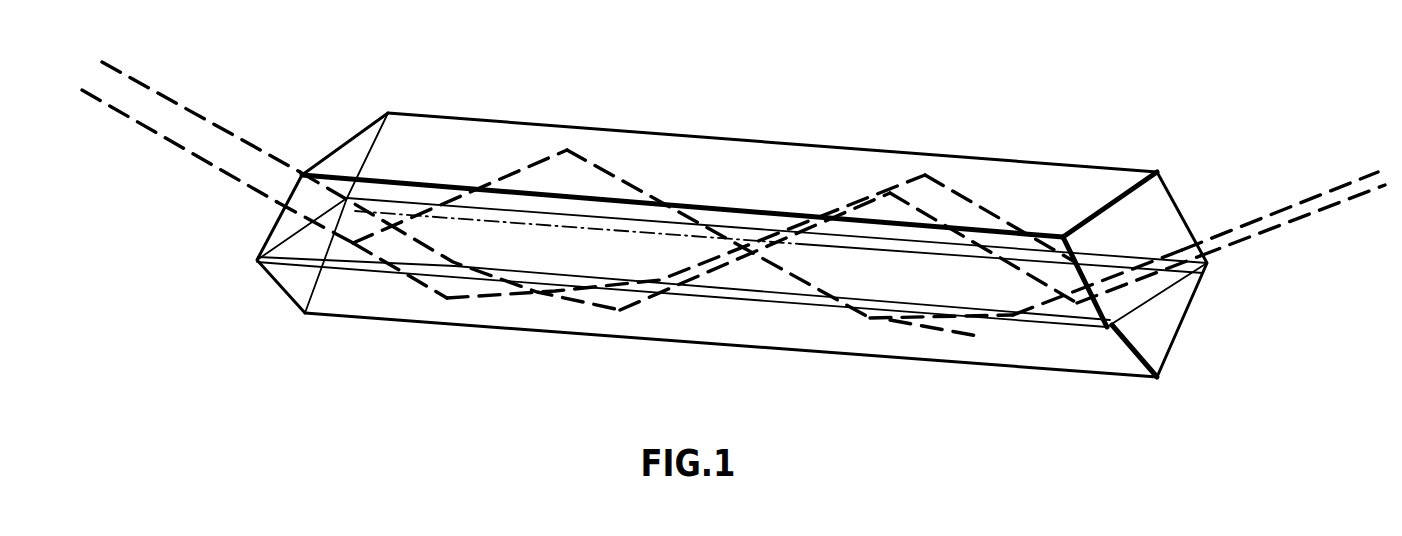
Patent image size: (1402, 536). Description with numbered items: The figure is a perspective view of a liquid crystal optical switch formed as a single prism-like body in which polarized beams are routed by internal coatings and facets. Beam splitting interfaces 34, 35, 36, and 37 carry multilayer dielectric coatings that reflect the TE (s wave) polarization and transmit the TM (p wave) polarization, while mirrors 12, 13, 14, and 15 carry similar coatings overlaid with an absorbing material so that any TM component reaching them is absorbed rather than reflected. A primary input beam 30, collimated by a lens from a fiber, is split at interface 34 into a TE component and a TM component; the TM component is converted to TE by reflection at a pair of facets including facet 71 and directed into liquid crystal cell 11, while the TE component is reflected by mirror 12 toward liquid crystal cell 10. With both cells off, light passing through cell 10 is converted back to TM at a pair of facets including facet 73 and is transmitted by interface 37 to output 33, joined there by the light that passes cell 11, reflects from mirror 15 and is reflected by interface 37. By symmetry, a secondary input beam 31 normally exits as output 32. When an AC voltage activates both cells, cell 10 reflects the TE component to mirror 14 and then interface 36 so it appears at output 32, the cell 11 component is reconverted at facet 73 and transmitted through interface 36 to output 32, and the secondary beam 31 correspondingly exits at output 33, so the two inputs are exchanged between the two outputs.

The liquid crystal cell 10 is at (748, 252).
The liquid crystal cell 11 is at (708, 283).
The mirror 12 is at (567, 150).
The mirror 13 is at (580, 157).
The mirror 14 is at (925, 175).
The mirror 15 is at (890, 193).
The primary input beam 30 is at (207, 121).
The secondary input beam 31 is at (138, 123).
The output 32 is at (1315, 198).
The output 33 is at (1275, 223).
The beam splitting interface 34 is at (387, 223).
The beam splitting interface 35 is at (353, 243).
The beam splitting interface 36 is at (1107, 273).
The beam splitting interface 37 is at (1077, 303).
The facet 71 is at (620, 310).
The facet 73 is at (983, 337).